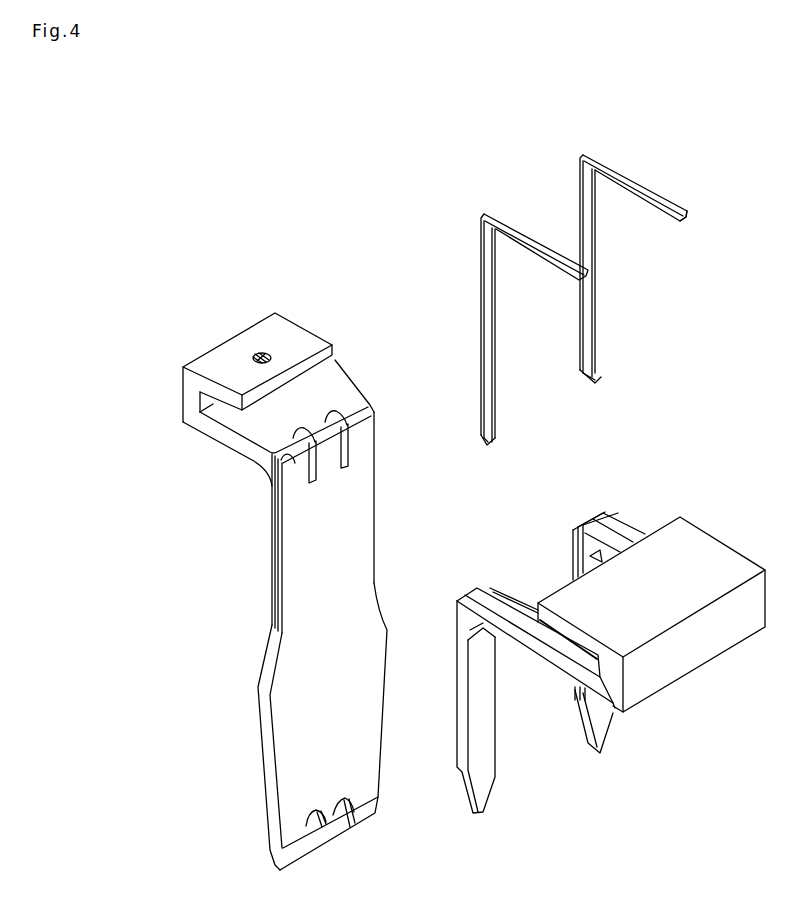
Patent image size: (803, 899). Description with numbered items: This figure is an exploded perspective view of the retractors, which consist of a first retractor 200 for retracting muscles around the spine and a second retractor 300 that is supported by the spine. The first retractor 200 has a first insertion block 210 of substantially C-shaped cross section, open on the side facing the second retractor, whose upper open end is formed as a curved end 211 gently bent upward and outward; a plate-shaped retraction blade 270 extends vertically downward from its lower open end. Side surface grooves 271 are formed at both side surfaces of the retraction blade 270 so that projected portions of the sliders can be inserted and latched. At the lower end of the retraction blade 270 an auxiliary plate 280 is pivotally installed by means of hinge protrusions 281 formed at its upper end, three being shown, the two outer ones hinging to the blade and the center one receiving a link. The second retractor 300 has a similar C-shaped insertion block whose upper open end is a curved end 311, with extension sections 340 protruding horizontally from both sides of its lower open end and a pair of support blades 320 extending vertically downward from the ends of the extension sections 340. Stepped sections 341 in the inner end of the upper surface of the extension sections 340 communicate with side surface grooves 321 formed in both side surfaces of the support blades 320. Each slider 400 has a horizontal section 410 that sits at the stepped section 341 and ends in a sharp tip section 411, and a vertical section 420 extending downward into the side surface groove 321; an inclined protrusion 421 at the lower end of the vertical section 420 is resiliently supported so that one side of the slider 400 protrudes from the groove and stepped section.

The first retractor 200 is at (229, 329).
The first insertion block 210 is at (182, 401).
The curved end 211 is at (336, 346).
The side surface grooves 271 is at (272, 539).
The retraction blade 270 is at (262, 733).
The auxiliary plate 280 is at (275, 858).
The hinge protrusions 281 is at (350, 818).
The second retractor 300 is at (748, 560).
The curved end 311 is at (680, 512).
The support blades 320 is at (607, 722).
The side surface grooves 321 is at (573, 553).
The extension sections 340 is at (617, 513).
The stepped sections 341 is at (603, 514).
The slider 400 is at (523, 171).
The horizontal section 410 is at (520, 233).
The tip section 411 is at (688, 212).
The vertical section 420 is at (483, 312).
The inclined protrusion 421 is at (481, 437).